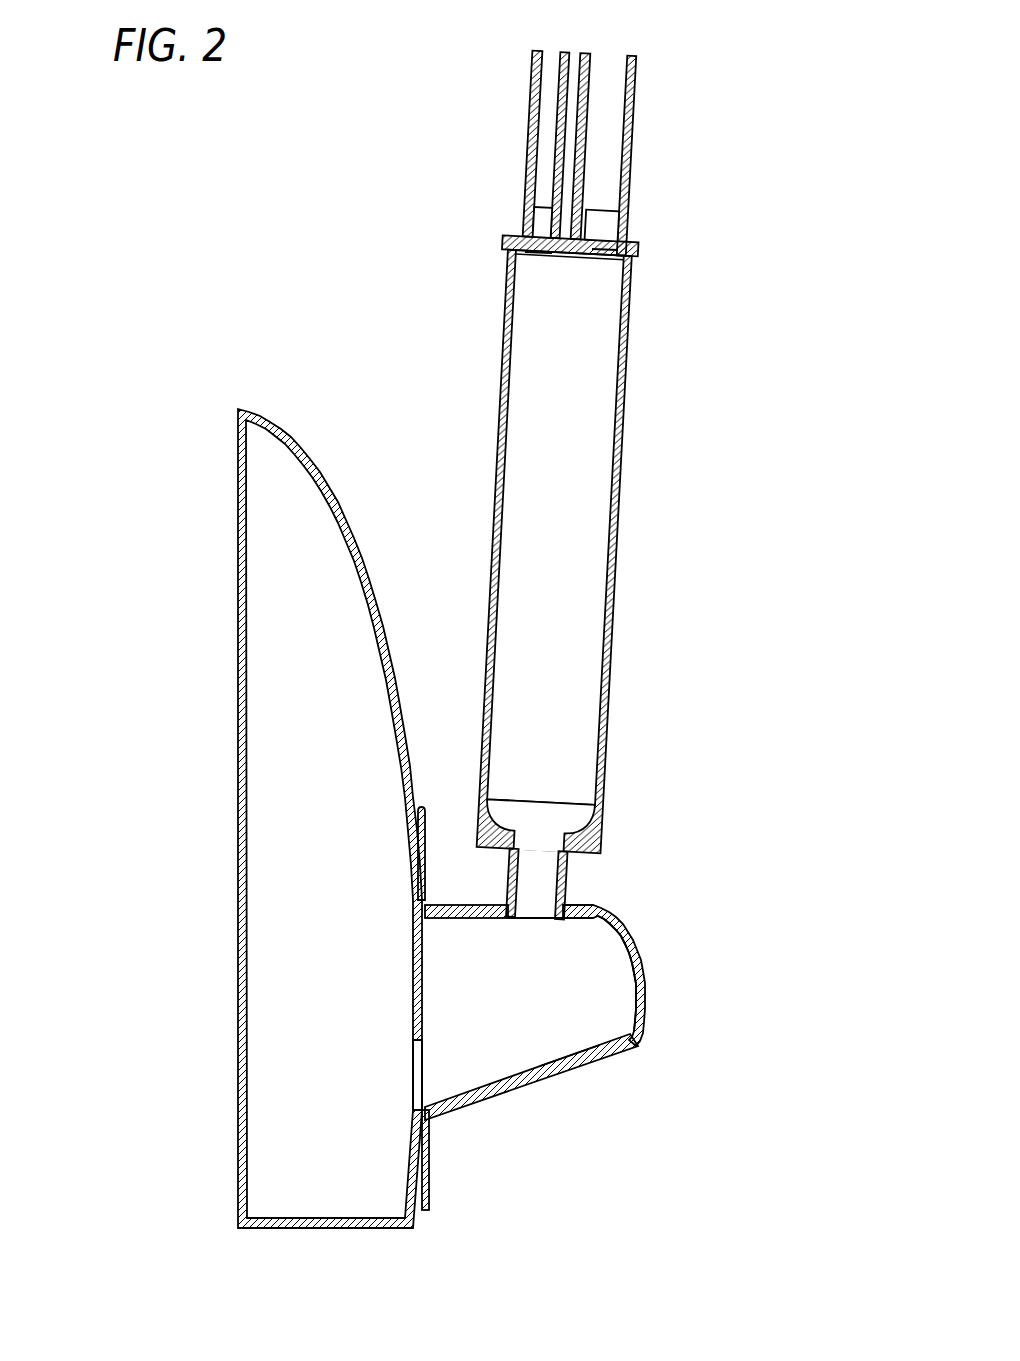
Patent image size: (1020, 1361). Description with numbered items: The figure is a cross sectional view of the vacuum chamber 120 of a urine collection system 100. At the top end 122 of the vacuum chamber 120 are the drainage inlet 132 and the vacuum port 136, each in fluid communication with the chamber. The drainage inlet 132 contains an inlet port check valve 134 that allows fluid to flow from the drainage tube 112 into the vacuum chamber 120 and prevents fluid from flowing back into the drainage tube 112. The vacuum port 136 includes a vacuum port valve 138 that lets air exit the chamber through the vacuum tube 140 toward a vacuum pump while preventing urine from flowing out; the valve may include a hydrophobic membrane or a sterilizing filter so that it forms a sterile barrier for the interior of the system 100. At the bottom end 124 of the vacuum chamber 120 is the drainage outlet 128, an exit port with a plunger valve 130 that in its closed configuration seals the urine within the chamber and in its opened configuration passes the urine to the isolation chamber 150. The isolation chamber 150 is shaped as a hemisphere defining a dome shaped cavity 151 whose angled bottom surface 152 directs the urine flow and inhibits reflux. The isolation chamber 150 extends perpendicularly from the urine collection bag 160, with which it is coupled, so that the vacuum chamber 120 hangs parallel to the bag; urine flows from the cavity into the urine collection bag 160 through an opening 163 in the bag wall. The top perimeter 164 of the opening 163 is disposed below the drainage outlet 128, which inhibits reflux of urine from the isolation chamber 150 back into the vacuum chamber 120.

The system 100 is at (222, 232).
The drainage tube 112 is at (610, 139).
The vacuum chamber 120 is at (497, 463).
The top end 122 is at (688, 258).
The bottom end 124 is at (684, 898).
The drainage outlet 128 is at (568, 884).
The plunger valve 130 is at (541, 845).
The drainage inlet 132 is at (634, 228).
The inlet port check valve 134 is at (605, 280).
The vacuum port 136 is at (517, 219).
The vacuum port valve 138 is at (538, 278).
The vacuum tube 140 is at (524, 118).
The isolation chamber 150 is at (482, 1100).
The dome shaped cavity 151 is at (577, 1058).
The angled bottom surface 152 is at (571, 1030).
The urine collection bag 160 is at (311, 458).
The opening 163 is at (393, 1080).
The top perimeter 164 is at (390, 1042).